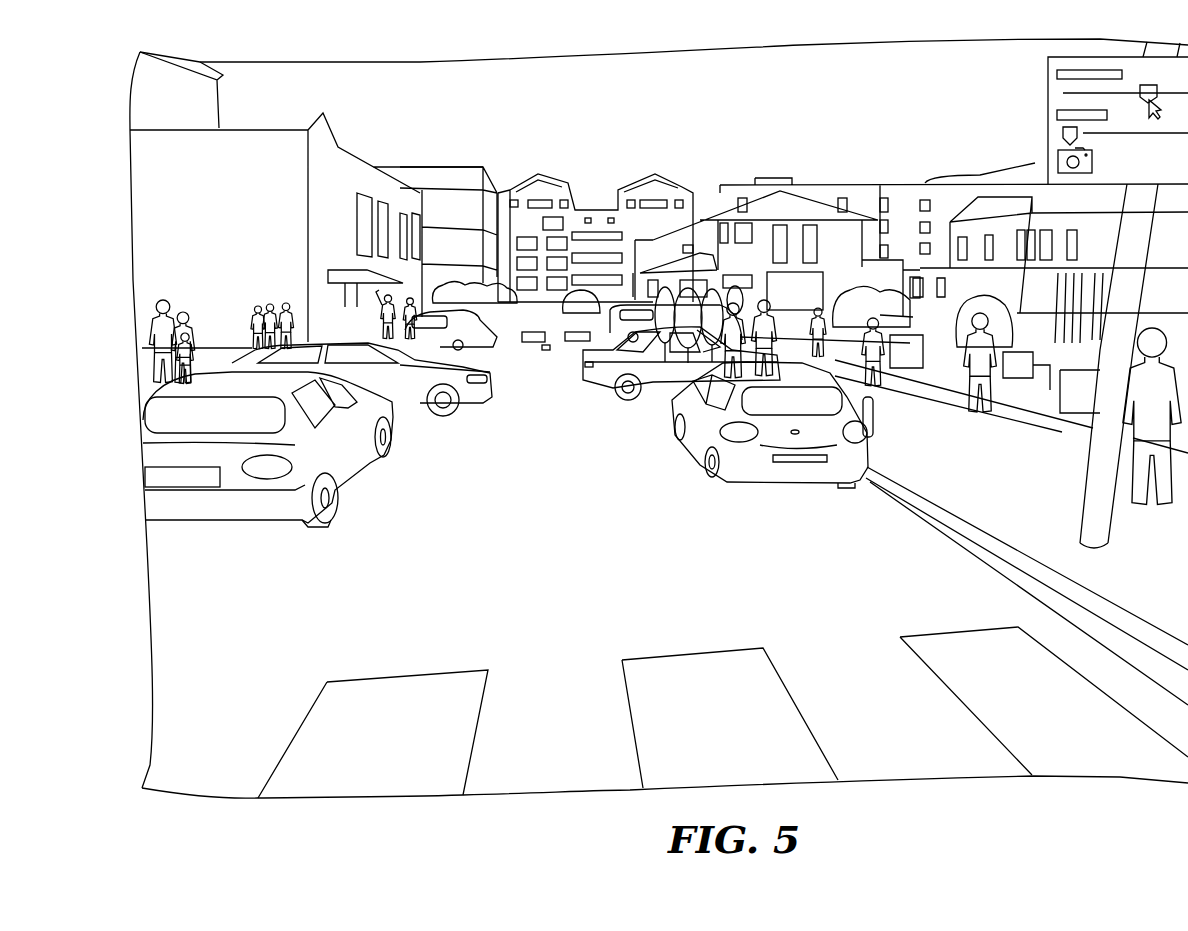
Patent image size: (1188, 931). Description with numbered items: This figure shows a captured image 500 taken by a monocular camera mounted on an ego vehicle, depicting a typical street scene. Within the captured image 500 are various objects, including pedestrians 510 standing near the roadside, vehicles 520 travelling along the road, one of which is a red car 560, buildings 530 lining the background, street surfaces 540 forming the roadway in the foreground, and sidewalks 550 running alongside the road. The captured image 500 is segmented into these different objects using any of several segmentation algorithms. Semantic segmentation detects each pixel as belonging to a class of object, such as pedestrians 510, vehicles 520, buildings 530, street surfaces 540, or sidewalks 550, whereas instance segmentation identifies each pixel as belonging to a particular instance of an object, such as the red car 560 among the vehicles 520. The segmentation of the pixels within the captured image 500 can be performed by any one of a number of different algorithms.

The captured image 500 is at (136, 127).
The pedestrians 510 is at (353, 330).
The vehicles 520 is at (528, 345).
The buildings 530 is at (1153, 221).
The street surfaces 540 is at (643, 618).
The sidewalks 550 is at (1075, 518).
The red car 560 is at (862, 492).